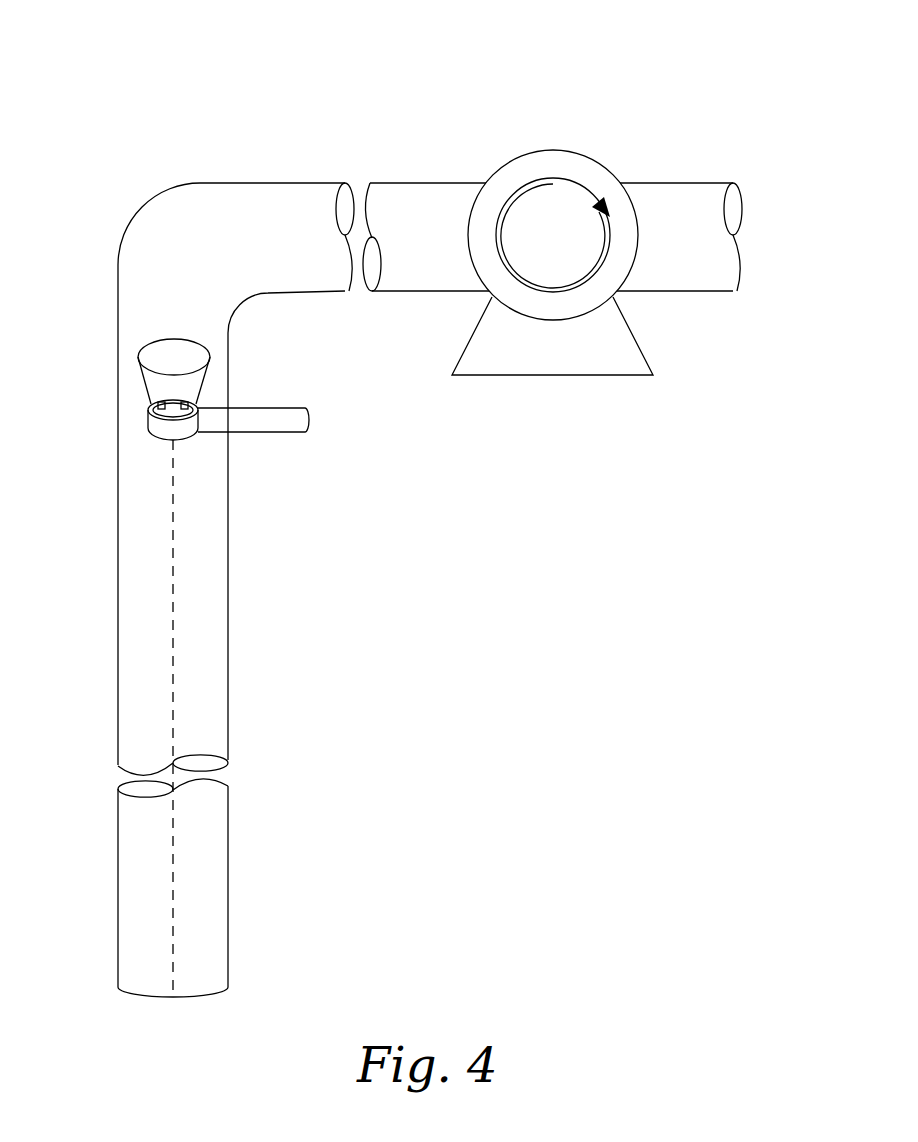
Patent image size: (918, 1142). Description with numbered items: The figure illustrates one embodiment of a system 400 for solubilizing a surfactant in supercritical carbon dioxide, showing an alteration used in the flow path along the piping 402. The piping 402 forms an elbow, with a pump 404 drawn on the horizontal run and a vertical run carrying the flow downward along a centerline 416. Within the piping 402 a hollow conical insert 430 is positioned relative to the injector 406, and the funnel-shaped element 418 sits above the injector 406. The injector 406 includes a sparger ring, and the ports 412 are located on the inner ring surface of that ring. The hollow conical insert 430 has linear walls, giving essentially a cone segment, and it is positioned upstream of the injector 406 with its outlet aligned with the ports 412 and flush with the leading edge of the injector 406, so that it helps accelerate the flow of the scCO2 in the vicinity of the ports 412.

The fluid delivery system 400 is at (72, 78).
The piping 402 is at (274, 184).
The pump 404 is at (592, 142).
The injector 406 is at (267, 397).
The ports 412 is at (159, 405).
The centerline axis 416 is at (168, 645).
The funnel 418 is at (145, 328).
The hollow conical insert 430 is at (178, 332).